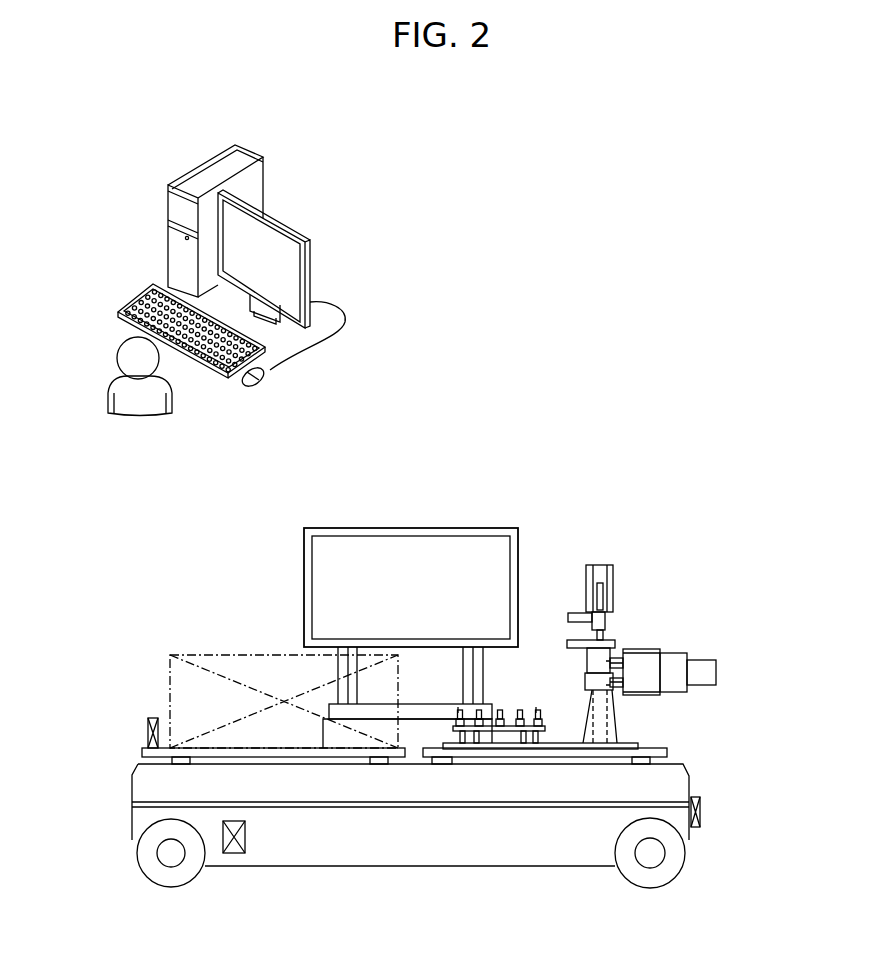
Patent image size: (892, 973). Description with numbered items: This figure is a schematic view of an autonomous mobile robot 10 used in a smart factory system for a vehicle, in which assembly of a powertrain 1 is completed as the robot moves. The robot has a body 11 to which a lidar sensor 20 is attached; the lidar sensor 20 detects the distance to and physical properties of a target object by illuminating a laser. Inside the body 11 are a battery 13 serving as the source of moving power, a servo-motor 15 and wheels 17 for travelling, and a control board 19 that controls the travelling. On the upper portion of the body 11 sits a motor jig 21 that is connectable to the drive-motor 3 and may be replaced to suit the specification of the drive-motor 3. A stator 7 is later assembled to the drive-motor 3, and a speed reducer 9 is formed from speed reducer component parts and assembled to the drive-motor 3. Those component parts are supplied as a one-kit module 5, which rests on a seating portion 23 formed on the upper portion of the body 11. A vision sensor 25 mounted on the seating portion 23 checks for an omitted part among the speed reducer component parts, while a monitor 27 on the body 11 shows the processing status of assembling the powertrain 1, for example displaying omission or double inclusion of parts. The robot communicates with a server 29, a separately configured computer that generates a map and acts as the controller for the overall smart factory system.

The powertrain 1 is at (713, 637).
The drive-motor 3 is at (642, 650).
The one-kit module 5 is at (220, 655).
The stator 7 is at (675, 660).
The speed reducer 9 is at (705, 677).
The autonomous mobile robot 10 is at (428, 467).
The body 11 is at (533, 845).
The battery 13 is at (448, 790).
The servo-motor 15 is at (166, 860).
The wheels 17 is at (188, 875).
The control board 19 is at (237, 850).
The lidar sensor 20 is at (697, 794).
The motor jig 21 is at (600, 600).
The seating portion 23 is at (143, 752).
The vision sensor 25 is at (153, 718).
The monitor 27 is at (483, 528).
The server 29 is at (312, 220).